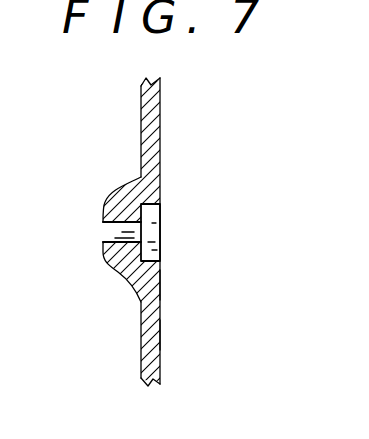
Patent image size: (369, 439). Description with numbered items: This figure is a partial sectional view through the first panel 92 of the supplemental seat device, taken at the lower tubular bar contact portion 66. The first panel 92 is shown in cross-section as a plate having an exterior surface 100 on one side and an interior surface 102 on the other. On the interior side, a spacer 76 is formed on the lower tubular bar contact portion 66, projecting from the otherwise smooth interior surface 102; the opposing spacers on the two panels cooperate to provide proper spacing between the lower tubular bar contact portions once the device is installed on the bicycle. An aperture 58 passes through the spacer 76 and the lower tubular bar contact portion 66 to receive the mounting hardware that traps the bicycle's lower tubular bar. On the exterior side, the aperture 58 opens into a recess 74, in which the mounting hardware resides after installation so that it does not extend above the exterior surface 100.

The exterior surface 100 is at (160, 172).
The interior surface 102 is at (141, 140).
The spacer 76 is at (113, 270).
The aperture 58 is at (110, 232).
The recess 74 is at (152, 220).
The first panel 92 is at (160, 293).
The lower tubular bar contact portion 66 is at (160, 327).